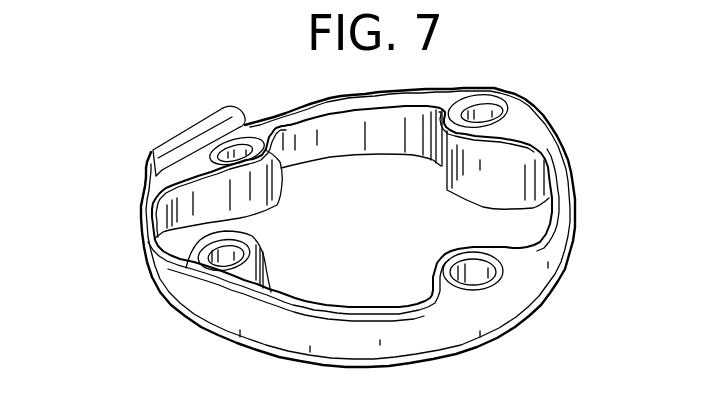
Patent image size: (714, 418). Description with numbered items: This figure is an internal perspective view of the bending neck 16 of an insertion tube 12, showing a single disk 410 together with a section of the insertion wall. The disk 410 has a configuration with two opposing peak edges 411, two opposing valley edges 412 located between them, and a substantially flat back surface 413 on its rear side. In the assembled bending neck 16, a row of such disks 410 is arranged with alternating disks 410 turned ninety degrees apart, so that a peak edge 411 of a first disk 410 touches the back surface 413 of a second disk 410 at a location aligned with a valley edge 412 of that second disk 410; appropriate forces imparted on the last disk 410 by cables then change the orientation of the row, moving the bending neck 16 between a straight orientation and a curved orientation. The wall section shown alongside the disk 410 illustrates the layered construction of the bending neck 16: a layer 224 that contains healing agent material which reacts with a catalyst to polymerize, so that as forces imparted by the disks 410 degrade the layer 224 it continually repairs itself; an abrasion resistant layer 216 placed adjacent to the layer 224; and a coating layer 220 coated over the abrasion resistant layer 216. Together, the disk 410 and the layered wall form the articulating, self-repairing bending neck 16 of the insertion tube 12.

The mounting assembly 12 is at (320, 202).
The bending neck 16 is at (343, 202).
The abrasion resistant layer 216 is at (240, 124).
The coating layer 220 is at (213, 117).
The layer 224 is at (265, 138).
The disk 410 is at (523, 122).
The peak edges 411 is at (510, 76).
The valley edges 412 is at (202, 127).
The back surface 413 is at (222, 358).